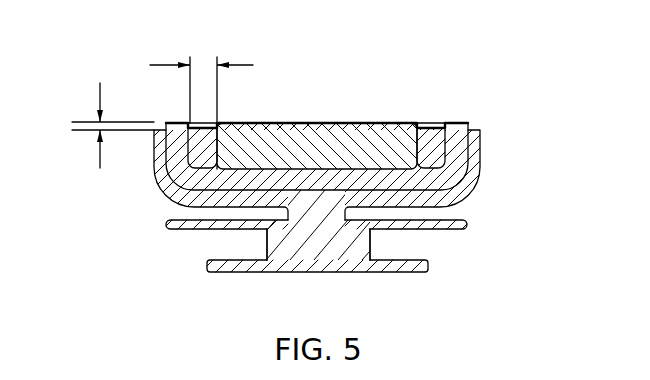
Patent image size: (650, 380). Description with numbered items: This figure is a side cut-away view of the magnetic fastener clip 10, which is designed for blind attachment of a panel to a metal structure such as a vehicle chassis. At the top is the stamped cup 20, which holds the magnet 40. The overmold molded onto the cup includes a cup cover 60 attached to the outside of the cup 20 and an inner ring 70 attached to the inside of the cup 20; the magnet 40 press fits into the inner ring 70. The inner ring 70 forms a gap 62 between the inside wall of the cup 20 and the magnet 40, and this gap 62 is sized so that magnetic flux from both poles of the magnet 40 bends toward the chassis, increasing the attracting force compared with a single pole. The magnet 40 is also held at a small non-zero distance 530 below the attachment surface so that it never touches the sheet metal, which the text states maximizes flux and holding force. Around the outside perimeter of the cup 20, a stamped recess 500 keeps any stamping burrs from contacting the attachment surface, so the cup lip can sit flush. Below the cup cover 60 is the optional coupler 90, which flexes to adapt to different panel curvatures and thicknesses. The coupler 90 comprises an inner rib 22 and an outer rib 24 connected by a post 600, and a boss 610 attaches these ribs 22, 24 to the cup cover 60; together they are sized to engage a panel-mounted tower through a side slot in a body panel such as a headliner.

The magnetic fastener clip 10 is at (299, 168).
The cup 20 is at (462, 130).
The inner rib 22 is at (447, 224).
The outer rib 24 is at (408, 268).
The magnet 40 is at (312, 123).
The cup cover 60 is at (475, 143).
The gap 62 is at (240, 60).
The inner ring 70 is at (433, 137).
The coupler 90 is at (350, 252).
The recess 500 is at (163, 126).
The distance 530 is at (100, 96).
The post 600 is at (285, 251).
The boss 610 is at (308, 208).